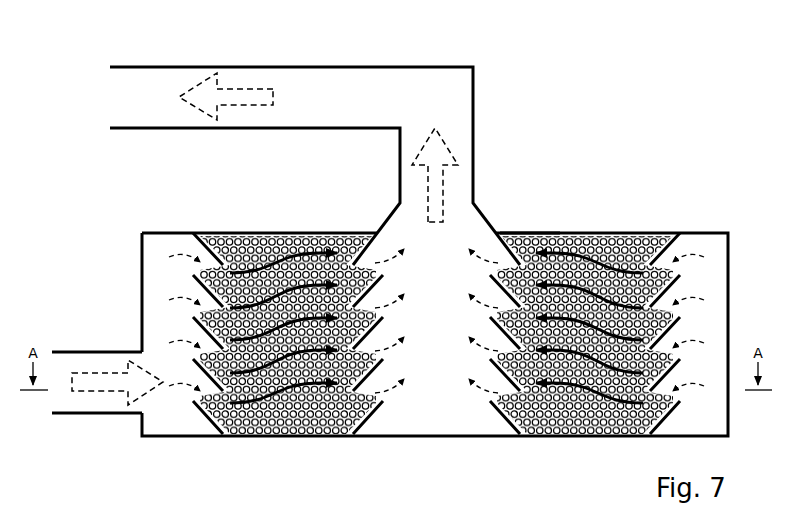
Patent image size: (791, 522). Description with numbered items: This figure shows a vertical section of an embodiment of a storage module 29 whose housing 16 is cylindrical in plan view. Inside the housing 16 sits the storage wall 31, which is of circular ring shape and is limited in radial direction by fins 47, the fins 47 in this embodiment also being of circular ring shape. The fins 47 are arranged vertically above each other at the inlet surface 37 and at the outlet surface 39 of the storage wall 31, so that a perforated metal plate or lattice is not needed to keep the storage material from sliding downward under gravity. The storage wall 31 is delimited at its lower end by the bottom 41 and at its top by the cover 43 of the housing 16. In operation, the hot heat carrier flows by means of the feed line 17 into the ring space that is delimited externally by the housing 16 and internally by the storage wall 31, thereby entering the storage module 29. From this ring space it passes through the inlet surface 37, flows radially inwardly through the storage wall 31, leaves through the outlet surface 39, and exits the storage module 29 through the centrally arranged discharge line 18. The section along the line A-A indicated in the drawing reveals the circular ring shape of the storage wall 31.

The housing 16 is at (729, 233).
The feed line 17 is at (80, 351).
The discharge line 18 is at (378, 66).
The storage module 29 is at (578, 180).
The storage wall 31 is at (298, 433).
The inlet surface 37 is at (196, 297).
The outlet surface 39 is at (388, 338).
The bottom 41 is at (612, 437).
The cover 43 is at (709, 233).
The fins 47 is at (204, 249).